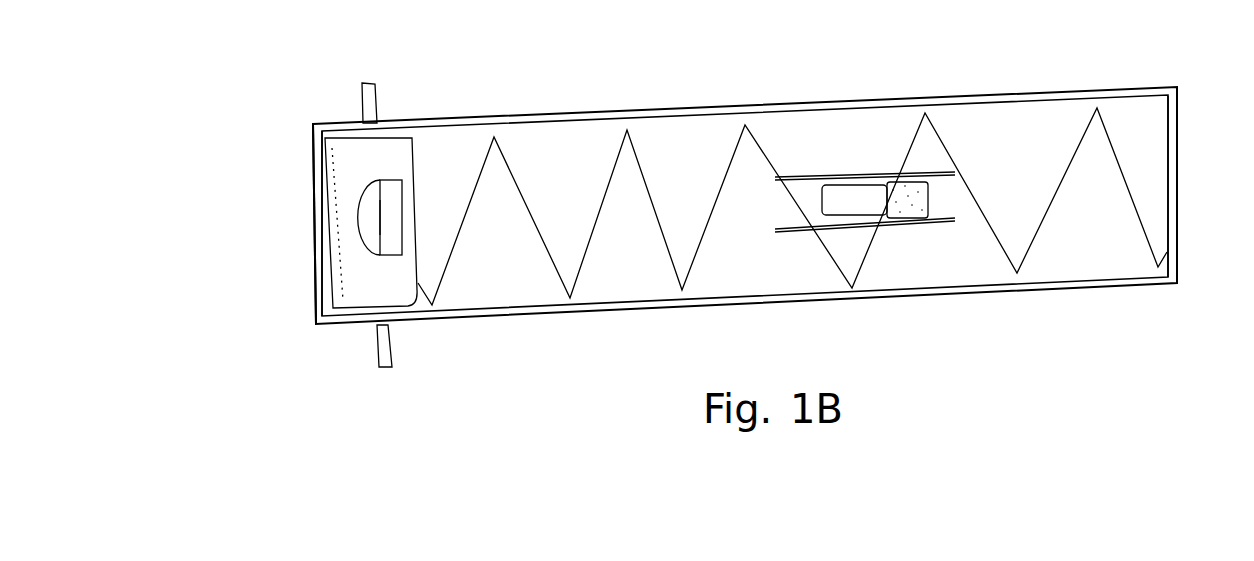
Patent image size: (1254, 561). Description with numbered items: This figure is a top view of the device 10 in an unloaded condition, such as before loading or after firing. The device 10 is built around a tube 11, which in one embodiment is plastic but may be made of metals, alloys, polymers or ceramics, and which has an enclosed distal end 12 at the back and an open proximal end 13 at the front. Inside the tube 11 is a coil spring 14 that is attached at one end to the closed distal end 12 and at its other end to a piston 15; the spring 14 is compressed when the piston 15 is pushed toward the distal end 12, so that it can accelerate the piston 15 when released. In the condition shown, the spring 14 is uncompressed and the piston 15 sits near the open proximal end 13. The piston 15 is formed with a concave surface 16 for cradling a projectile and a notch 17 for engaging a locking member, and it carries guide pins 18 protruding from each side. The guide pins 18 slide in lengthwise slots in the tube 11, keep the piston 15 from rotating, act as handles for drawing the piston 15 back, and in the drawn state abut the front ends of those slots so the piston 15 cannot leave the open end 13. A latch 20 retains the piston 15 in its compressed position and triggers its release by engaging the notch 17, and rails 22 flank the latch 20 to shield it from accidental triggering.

The device 10 is at (784, 72).
The tube 11 is at (1157, 286).
The distal end 12 is at (1181, 197).
The proximal end 13 is at (316, 212).
The coil spring 14 is at (1043, 231).
The piston 15 is at (416, 168).
The concave surface 16 is at (345, 253).
The notch 17 is at (376, 236).
The guide pins 18 is at (379, 97).
The latch 20 is at (860, 185).
The rails 22 is at (921, 228).